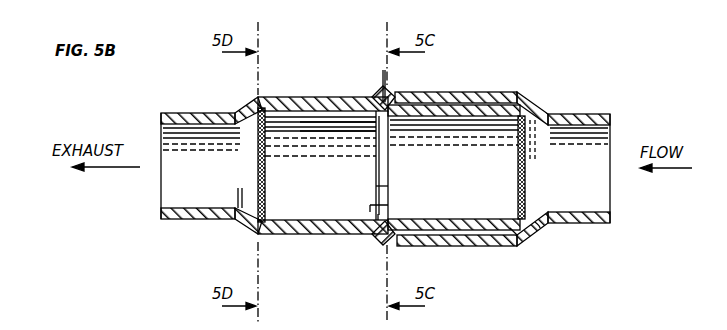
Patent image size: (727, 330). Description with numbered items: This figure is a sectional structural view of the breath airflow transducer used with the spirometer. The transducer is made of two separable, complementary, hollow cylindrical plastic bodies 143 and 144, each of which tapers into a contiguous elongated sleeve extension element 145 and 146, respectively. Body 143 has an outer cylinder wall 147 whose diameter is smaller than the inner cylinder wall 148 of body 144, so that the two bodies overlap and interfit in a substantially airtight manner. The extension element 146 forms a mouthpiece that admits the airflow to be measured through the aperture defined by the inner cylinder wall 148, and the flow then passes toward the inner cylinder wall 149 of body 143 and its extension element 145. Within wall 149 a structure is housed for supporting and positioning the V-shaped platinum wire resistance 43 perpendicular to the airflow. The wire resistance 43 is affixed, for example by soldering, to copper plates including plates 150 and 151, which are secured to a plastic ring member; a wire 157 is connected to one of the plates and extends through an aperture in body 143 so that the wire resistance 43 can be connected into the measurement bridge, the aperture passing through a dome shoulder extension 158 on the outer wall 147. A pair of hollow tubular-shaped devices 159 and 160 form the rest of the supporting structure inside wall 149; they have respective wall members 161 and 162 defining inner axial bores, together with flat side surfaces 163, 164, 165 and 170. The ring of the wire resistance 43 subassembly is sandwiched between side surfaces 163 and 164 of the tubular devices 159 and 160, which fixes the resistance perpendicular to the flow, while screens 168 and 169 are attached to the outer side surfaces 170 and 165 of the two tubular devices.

The platinum wire resistance 43 is at (390, 172).
The hollow cylindrical plastic body 143 is at (312, 96).
The hollow cylindrical plastic body 144 is at (453, 92).
The elongated sleeve extension element 145 is at (208, 113).
The elongated sleeve extension element 146 is at (578, 113).
The outer cylinder wall 147 is at (348, 97).
The inner cylinder wall 148 is at (520, 100).
The inner cylinder wall 149 is at (187, 127).
The copper plate 150 is at (382, 208).
The copper plate 151 is at (389, 148).
The wire 157 is at (383, 88).
The dome shoulder extension 158 is at (378, 92).
The hollow tubular-shaped device 159 is at (322, 118).
The hollow tubular-shaped device 160 is at (457, 116).
The wall member 161 is at (355, 118).
The wall member 162 is at (495, 116).
The flat side surface 163 is at (380, 234).
The flat side surface 164 is at (388, 191).
The flat side surface 165 is at (540, 230).
The screen 168 is at (258, 186).
The screen 169 is at (513, 240).
The flat side surface 170 is at (270, 238).